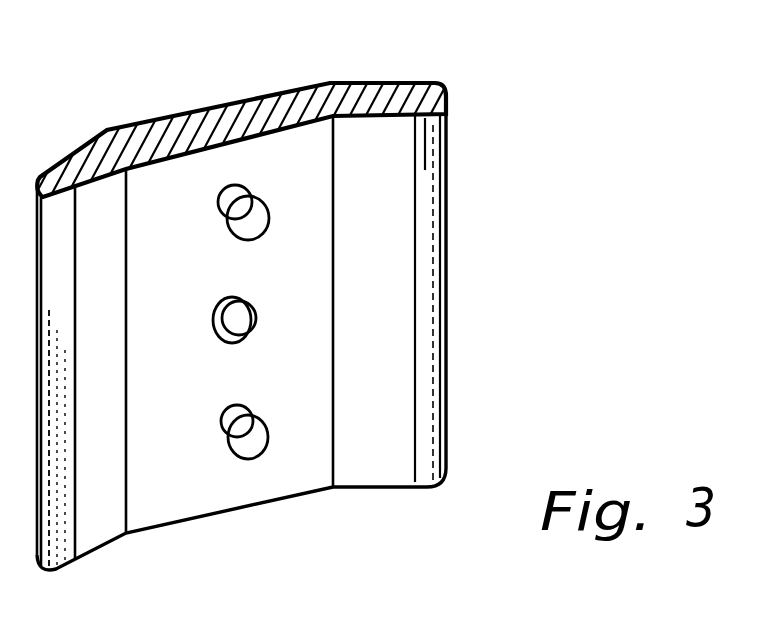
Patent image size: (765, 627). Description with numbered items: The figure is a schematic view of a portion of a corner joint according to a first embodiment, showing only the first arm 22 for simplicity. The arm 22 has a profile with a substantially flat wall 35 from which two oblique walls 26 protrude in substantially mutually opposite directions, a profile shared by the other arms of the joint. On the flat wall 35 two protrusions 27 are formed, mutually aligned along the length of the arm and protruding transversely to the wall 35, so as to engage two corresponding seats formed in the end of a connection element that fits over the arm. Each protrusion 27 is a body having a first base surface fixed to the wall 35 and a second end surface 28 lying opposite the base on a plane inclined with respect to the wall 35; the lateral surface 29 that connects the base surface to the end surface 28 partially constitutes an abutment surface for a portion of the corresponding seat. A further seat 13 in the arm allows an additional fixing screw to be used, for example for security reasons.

The first arm 22 is at (462, 168).
The oblique walls 26 is at (438, 258).
The flat wall 35 is at (174, 172).
The protrusion 27 is at (249, 170).
The end surface 28 is at (271, 211).
The lateral surface 29 is at (229, 222).
The seat 13 is at (252, 318).